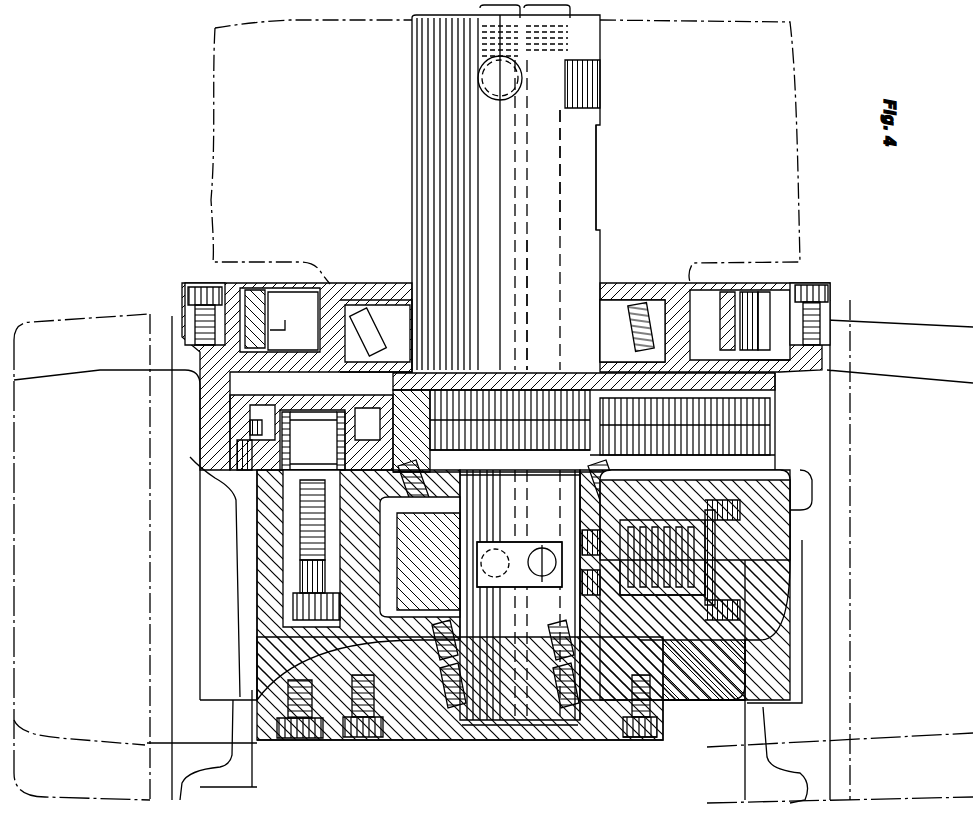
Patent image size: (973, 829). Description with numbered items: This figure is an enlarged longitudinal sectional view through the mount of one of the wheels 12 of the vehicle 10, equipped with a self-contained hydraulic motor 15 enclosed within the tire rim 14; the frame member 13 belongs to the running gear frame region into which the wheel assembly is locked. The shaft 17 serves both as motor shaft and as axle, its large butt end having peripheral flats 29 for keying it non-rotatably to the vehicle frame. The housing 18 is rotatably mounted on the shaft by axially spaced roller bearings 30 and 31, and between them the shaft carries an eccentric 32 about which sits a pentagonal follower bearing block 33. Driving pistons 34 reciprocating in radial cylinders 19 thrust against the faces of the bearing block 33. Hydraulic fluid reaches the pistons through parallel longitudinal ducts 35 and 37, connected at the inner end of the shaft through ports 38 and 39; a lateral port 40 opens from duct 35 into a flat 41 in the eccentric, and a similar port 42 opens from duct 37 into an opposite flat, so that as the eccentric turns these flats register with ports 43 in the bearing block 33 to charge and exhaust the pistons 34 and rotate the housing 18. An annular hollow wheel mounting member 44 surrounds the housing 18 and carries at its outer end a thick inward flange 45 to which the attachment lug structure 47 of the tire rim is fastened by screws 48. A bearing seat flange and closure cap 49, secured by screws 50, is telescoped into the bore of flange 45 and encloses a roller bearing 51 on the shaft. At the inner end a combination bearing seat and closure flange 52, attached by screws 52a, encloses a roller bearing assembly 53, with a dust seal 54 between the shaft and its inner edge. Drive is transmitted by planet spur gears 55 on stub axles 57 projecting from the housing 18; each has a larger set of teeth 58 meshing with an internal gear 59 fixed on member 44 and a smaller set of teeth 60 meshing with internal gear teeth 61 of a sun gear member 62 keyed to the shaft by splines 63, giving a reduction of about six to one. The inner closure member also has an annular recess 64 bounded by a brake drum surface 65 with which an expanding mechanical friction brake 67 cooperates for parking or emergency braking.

The vehicle 10 is at (242, 110).
The wheel 12 is at (140, 312).
The frame member 13 is at (70, 312).
The tire rim 14 is at (170, 505).
The hydraulic motor 15 is at (718, 600).
The shaft 17 is at (432, 145).
The housing 18 is at (655, 488).
The cylinders 19 is at (730, 500).
The peripheral flats 29 is at (600, 140).
The roller bearing 30 is at (590, 480).
The roller bearing 31 is at (555, 660).
The eccentric 32 is at (560, 630).
The follower bearing block 33 is at (480, 650).
The driving pistons 34 is at (738, 548).
The duct 35 is at (572, 195).
The duct 37 is at (525, 300).
The port 38 is at (604, 94).
The port 39 is at (524, 92).
The lateral port 40 is at (548, 578).
The flat 41 is at (505, 575).
The port 42 is at (487, 590).
The ports 43 is at (575, 540).
The wheel mounting member 44 is at (740, 578).
The annular flange 45 is at (705, 690).
The attachment lug structure 47 is at (268, 735).
The screws 48 is at (320, 735).
The bearing seat flange and closure cap 49 is at (622, 740).
The screws 50 is at (372, 732).
The roller bearing 51 is at (572, 720).
The bearing seat and closure flange 52 is at (690, 292).
The screws 52a is at (812, 300).
The roller bearing assembly 53 is at (640, 335).
The dust seal 54 is at (612, 292).
The planet spur gears 55 is at (340, 512).
The stub axles 57 is at (330, 398).
The larger diameter set of gear teeth 58 is at (370, 432).
The internal gear 59 is at (240, 450).
The smaller diameter set of teeth 60 is at (383, 290).
The internal gear teeth 61 is at (250, 420).
The sun gear member 62 is at (345, 290).
The splines 63 is at (584, 422).
The annular recess 64 is at (723, 290).
The brake drum surface 65 is at (768, 290).
The expanding mechanical friction brake 67 is at (745, 290).